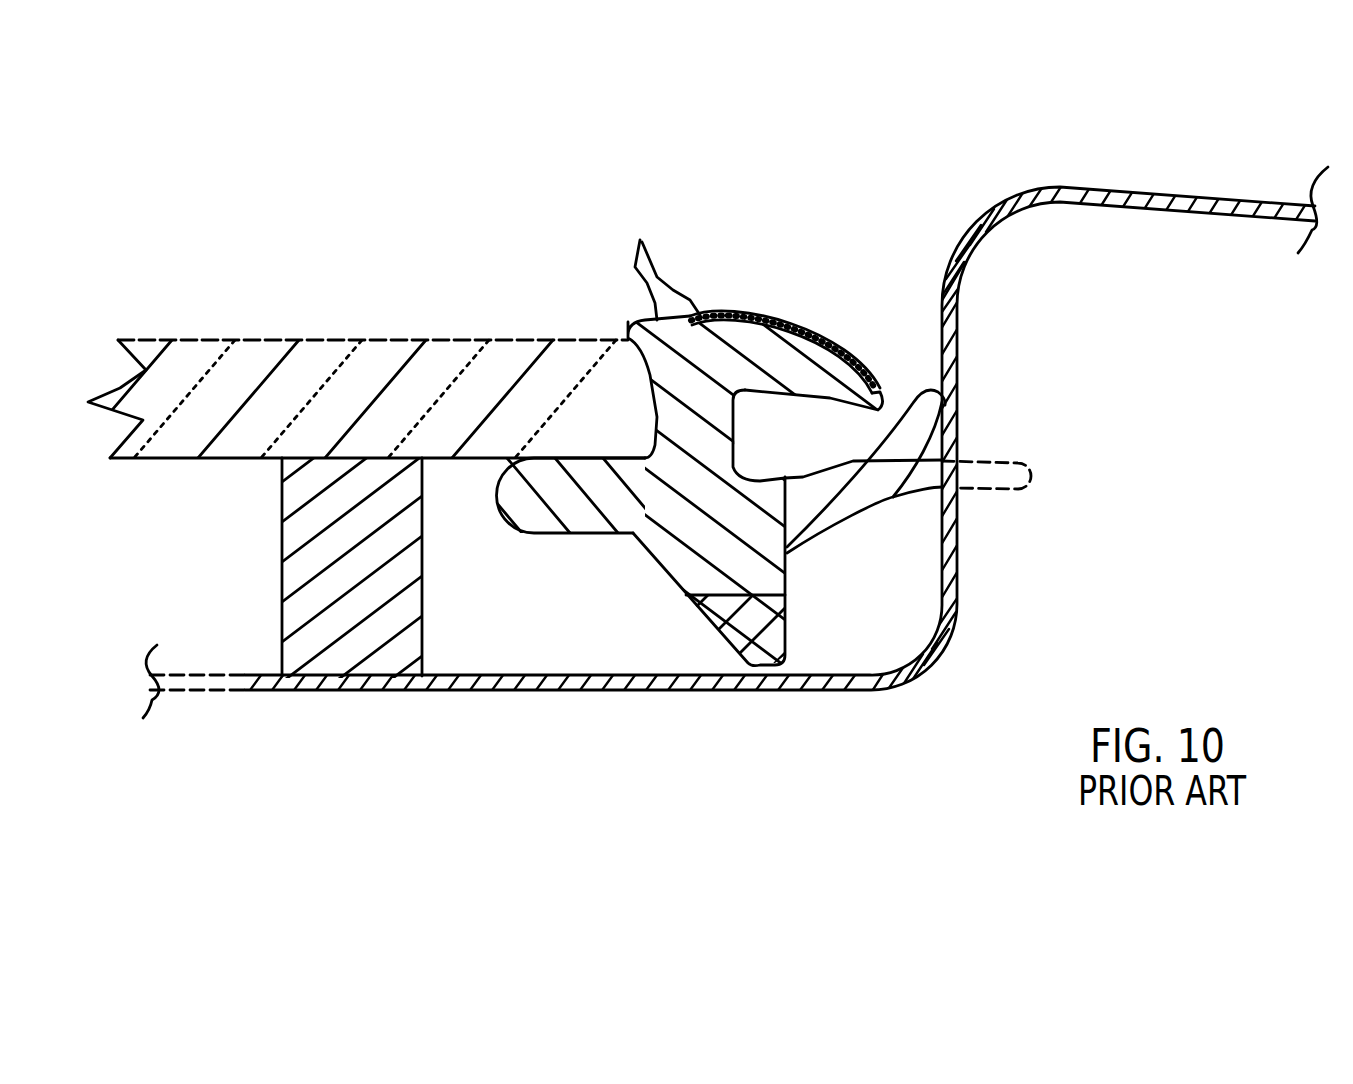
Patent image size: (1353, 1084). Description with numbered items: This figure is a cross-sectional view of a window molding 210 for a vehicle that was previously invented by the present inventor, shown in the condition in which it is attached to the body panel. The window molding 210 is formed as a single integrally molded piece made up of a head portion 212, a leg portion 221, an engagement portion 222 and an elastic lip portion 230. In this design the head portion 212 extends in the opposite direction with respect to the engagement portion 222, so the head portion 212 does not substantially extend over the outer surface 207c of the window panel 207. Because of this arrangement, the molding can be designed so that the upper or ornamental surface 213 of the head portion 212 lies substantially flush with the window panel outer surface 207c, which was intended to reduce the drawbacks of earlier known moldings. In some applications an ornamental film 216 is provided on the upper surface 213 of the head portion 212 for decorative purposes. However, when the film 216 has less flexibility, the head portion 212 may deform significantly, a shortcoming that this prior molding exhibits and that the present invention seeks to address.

The window panel 207 is at (322, 487).
The outer surface of window panel 207c is at (373, 276).
The window molding 210 is at (814, 272).
The head portion 212 is at (674, 439).
The upper or ornamental surface 213 is at (659, 256).
The ornamental film 216 is at (785, 285).
The leg portion 221 is at (776, 435).
The engagement portion 222 is at (571, 560).
The elastic lip portion 230 is at (917, 430).